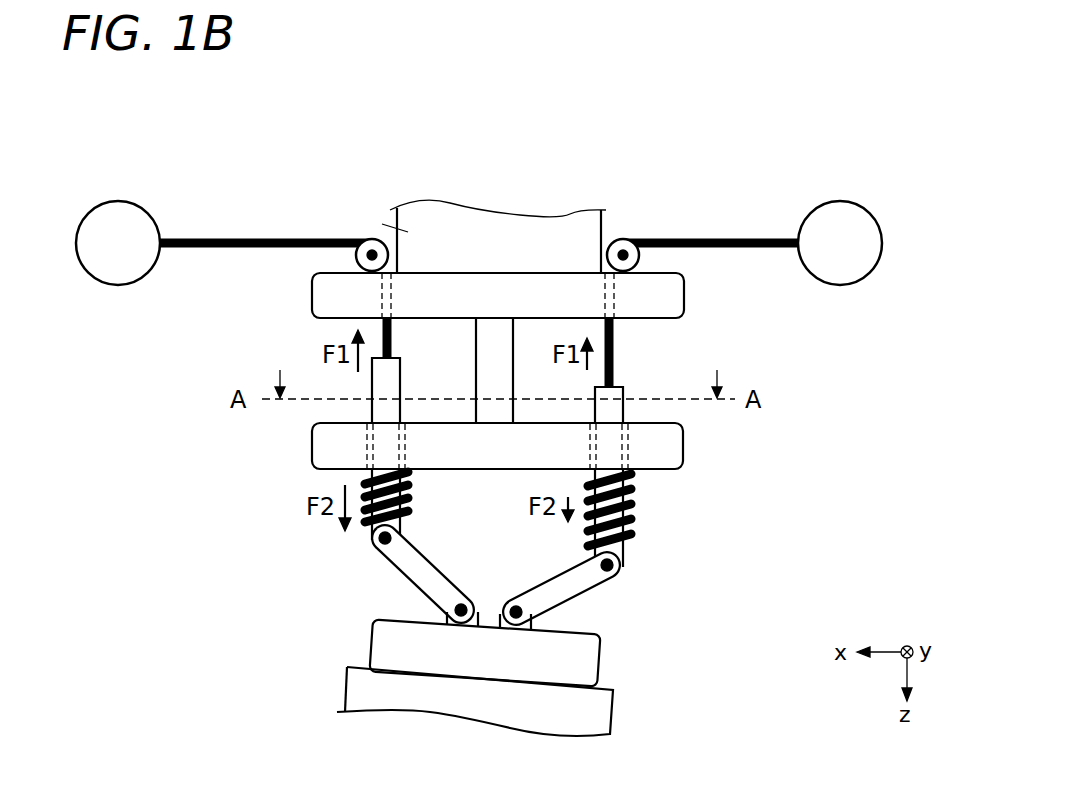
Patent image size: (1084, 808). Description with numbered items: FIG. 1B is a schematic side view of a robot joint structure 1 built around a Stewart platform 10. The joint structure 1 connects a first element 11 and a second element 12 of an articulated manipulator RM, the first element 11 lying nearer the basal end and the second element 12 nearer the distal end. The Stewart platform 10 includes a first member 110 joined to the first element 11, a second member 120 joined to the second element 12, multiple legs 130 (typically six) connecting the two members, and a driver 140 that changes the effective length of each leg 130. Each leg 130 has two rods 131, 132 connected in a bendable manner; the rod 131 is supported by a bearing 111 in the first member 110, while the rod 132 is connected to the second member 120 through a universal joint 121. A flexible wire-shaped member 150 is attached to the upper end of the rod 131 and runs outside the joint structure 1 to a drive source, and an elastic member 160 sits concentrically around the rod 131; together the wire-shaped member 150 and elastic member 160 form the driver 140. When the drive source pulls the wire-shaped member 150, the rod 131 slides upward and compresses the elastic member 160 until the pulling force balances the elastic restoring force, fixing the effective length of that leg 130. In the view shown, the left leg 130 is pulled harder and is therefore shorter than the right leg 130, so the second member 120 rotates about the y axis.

The manipulator RM is at (148, 191).
The joint structure 1 is at (200, 285).
The Stewart platform 10 is at (285, 425).
The first element 11 is at (393, 232).
The second element 12 is at (362, 700).
The first member 110 is at (670, 445).
The bearing 111 is at (630, 452).
The second member 120 is at (600, 668).
The universal joint 121 is at (560, 621).
The leg 130 is at (742, 553).
The rod 131 is at (617, 543).
The rod 132 is at (565, 610).
The driver 140 is at (803, 359).
The wire-shaped member 150 is at (615, 343).
The elastic member 160 is at (625, 527).